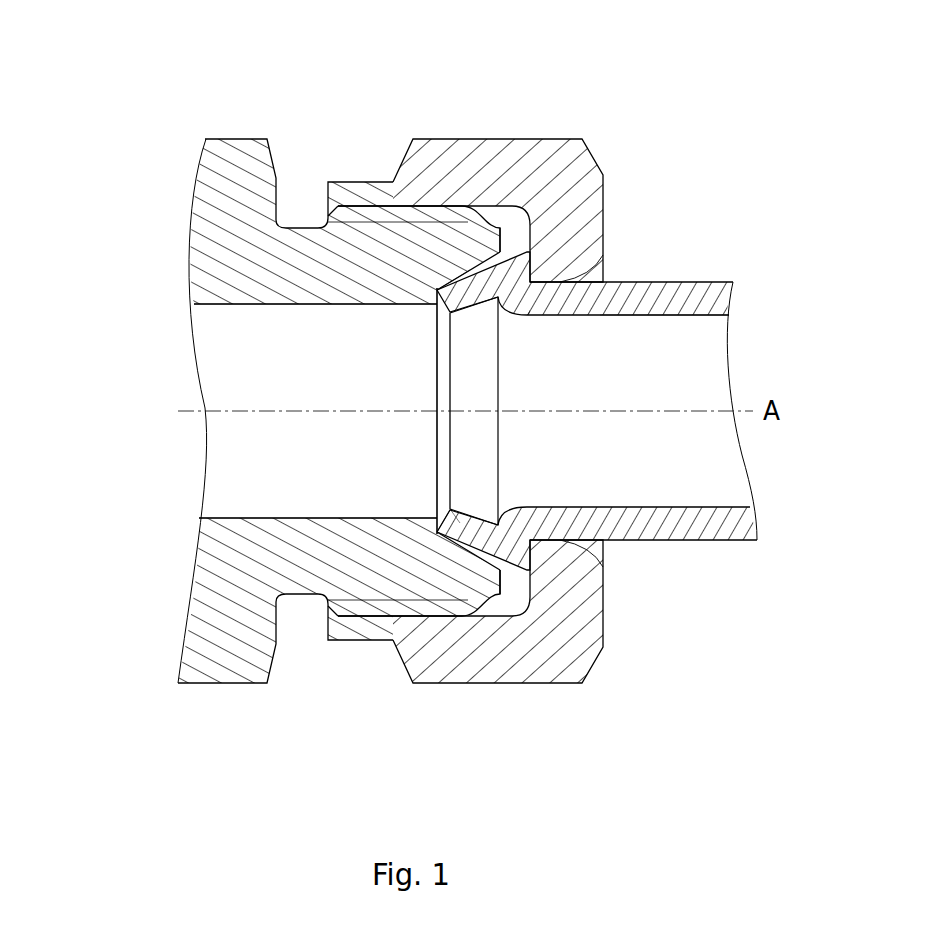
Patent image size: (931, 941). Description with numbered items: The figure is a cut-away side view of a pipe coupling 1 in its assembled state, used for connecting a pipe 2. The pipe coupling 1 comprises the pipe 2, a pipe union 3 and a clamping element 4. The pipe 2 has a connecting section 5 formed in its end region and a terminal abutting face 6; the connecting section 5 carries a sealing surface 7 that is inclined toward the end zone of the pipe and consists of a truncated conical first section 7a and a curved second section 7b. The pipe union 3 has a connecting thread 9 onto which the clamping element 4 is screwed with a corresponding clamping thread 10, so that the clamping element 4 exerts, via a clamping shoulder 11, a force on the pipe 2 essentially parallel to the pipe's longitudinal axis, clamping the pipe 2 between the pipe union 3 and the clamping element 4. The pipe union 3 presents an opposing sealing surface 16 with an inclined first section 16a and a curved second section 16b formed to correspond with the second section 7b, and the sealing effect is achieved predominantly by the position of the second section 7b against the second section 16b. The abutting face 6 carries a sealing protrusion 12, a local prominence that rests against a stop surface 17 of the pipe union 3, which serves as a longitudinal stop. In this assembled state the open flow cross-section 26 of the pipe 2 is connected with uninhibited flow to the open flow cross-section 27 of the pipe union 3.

The pipe coupling 1 is at (152, 147).
The pipe 2 is at (713, 297).
The pipe union 3 is at (232, 175).
The clamping element 4 is at (545, 163).
The connecting section 5 is at (479, 339).
The abutting face 6 is at (435, 313).
The sealing surface 7 is at (485, 551).
The first section of the sealing surface 7a is at (514, 554).
The second section of the sealing surface 7b is at (452, 533).
The connecting thread 9 is at (357, 213).
The clamping thread 10 is at (330, 212).
The clamping shoulder 11 is at (532, 278).
The sealing protrusion 12 is at (440, 533).
The opposing sealing surface 16 is at (476, 264).
The first section of the opposing sealing surface 16a is at (497, 230).
The second section of the opposing sealing surface 16b is at (437, 289).
The stop surface 17 is at (435, 292).
The open flow cross-section of the pipe 26 is at (673, 337).
The open flow cross-section of the pipe union 27 is at (248, 372).